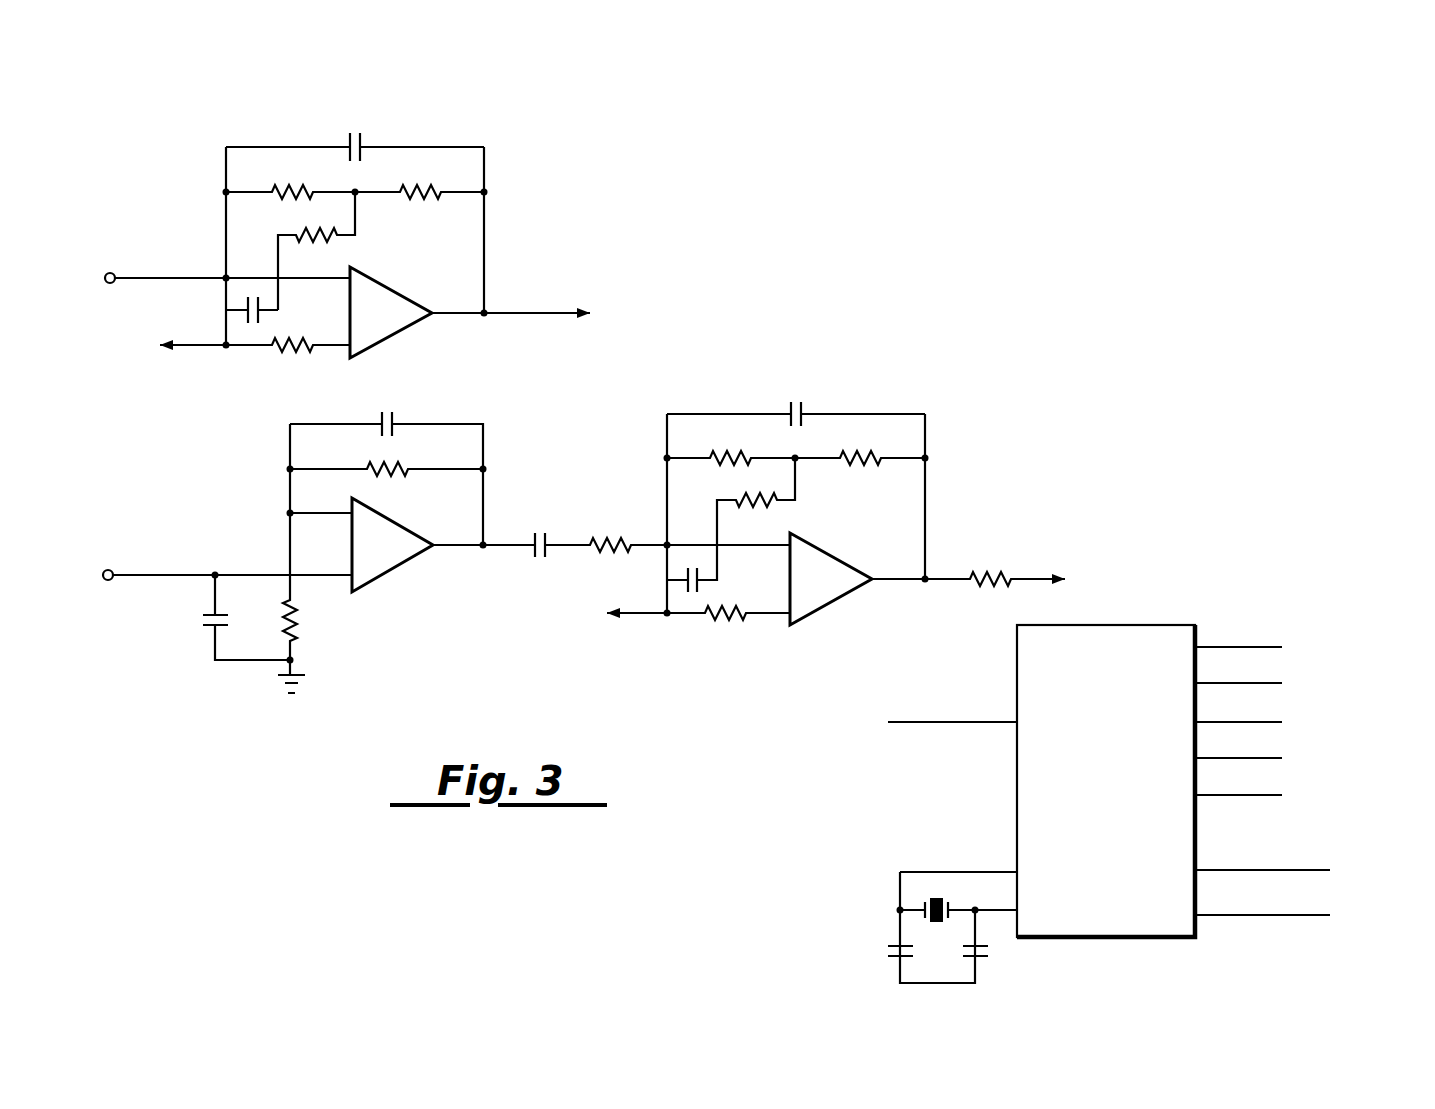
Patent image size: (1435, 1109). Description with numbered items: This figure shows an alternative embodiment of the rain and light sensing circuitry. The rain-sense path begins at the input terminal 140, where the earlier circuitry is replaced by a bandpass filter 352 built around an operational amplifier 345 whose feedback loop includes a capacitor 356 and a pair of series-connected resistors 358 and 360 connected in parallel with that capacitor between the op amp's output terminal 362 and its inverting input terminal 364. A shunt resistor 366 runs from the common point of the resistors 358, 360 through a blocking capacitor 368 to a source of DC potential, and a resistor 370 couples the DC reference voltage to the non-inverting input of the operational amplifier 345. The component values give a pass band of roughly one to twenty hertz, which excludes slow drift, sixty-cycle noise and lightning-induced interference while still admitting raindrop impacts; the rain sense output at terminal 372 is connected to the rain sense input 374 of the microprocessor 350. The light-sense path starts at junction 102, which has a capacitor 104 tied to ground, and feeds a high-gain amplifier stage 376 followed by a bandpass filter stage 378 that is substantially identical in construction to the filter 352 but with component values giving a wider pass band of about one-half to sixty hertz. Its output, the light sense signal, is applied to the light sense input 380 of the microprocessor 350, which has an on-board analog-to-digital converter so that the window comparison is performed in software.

The input terminal 140 is at (110, 272).
The inverting input terminal 364 is at (225, 277).
The capacitor 356 is at (352, 132).
The resistor 358 is at (296, 186).
The resistor 360 is at (413, 183).
The shunt resistor 366 is at (318, 230).
The blocking capacitor 368 is at (248, 298).
The resistor 370 is at (287, 350).
The operational amplifier 345 is at (387, 282).
The bandpass filter 352 is at (390, 245).
The output terminal 362 is at (487, 310).
The rain sense output terminal 372 is at (563, 313).
The junction 102 is at (215, 572).
The capacitor 104 is at (202, 617).
The high-gain amplifier stage 376 is at (385, 552).
The bandpass filter stage 378 is at (653, 510).
The rain sense input 374 is at (1227, 870).
The light sense input 380 is at (1230, 915).
The microprocessor 350 is at (1134, 808).